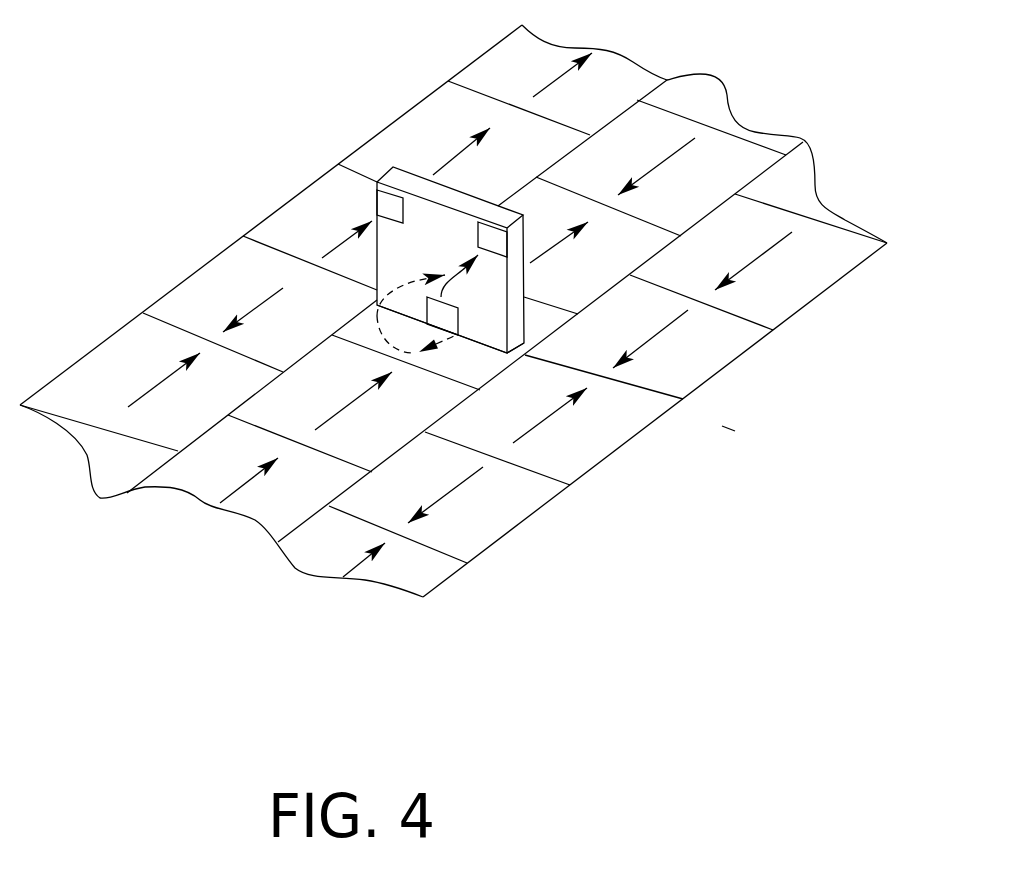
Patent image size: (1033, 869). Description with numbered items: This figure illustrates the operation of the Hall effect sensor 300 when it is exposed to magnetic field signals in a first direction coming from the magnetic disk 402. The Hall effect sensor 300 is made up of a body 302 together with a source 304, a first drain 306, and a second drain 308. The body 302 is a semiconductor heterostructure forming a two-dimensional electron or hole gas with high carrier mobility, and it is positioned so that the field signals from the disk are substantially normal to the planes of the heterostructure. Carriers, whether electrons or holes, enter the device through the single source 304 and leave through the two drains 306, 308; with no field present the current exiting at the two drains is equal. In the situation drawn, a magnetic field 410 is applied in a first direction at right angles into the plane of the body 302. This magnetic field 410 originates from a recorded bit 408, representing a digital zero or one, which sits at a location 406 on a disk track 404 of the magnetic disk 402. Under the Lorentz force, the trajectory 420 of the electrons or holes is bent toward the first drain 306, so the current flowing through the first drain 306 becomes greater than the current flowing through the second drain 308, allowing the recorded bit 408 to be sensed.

The Hall effect sensor 300 is at (330, 208).
The body 302 is at (526, 297).
The source 304 is at (525, 352).
The first drain 306 is at (494, 238).
The second drain 308 is at (388, 193).
The magnetic disk 402 is at (718, 425).
The disk track 404 is at (695, 110).
The location 406 is at (478, 359).
The recorded bit 408 is at (442, 330).
The magnetic field 410 is at (375, 314).
The trajectory 420 is at (453, 282).